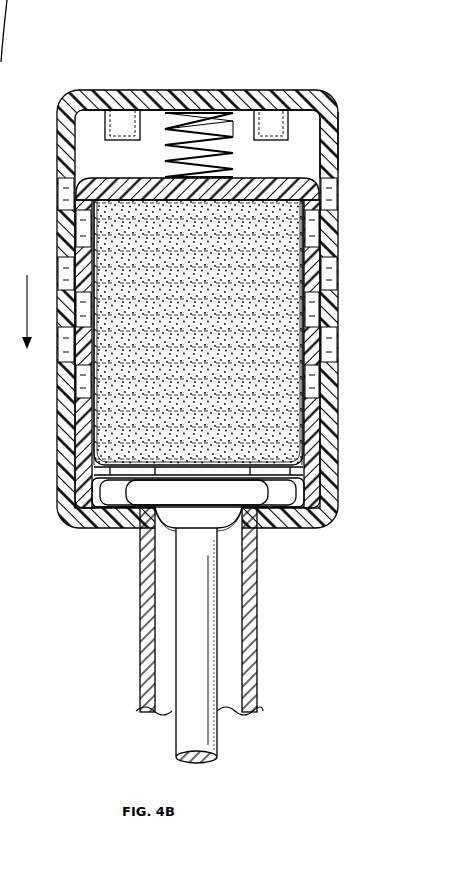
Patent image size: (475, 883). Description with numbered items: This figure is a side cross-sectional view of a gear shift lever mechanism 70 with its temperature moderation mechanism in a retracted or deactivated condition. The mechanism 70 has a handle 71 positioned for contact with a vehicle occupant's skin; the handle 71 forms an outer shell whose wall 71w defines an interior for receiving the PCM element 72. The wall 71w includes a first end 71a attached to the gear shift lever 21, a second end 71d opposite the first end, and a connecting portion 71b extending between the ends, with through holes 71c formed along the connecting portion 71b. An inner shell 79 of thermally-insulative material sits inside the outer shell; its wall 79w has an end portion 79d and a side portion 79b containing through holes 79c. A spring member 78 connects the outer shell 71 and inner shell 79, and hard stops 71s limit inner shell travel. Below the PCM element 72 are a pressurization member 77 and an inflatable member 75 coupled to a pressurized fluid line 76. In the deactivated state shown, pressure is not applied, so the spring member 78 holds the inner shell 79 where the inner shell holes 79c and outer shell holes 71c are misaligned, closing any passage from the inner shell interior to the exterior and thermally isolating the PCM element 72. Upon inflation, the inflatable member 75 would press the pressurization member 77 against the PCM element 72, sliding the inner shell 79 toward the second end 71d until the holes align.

The gear shift lever mechanism 70 is at (49, 88).
The handle 71 is at (92, 87).
The second end 71d is at (115, 90).
The hard stops 71s is at (125, 120).
The connecting portion 71b is at (338, 118).
The wall 71w is at (330, 142).
The through holes 71c is at (338, 272).
The first end 71a is at (130, 528).
The spring member 78 is at (186, 130).
The inner shell 79 is at (197, 282).
The end portion 79d is at (237, 205).
The wall 79w is at (338, 277).
The through holes 79c is at (337, 312).
The side portion 79b is at (57, 345).
The PCM element 72 is at (97, 420).
The pressurization member 77 is at (103, 528).
The inflatable member 75 is at (275, 495).
The gear shift lever 21 is at (147, 665).
The pressurized fluid line 76 is at (218, 655).